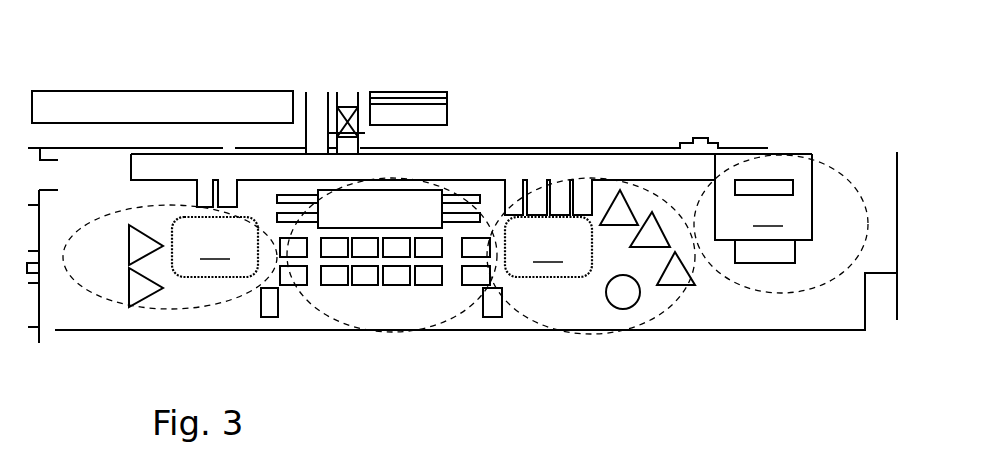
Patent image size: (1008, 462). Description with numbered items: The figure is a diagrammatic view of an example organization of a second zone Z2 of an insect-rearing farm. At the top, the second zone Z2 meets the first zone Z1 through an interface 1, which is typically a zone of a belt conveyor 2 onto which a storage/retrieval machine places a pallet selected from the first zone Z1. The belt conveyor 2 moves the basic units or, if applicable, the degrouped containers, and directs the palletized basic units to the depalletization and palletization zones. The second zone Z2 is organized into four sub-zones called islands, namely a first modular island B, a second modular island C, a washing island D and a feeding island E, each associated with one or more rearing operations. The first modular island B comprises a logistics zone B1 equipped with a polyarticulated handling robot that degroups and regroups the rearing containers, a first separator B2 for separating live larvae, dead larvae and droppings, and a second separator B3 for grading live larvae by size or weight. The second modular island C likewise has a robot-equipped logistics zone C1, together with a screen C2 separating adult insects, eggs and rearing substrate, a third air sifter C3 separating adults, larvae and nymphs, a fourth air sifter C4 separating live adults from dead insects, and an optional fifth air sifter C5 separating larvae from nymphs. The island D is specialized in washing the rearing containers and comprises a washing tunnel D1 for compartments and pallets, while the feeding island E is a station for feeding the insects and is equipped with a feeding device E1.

The interface 1 is at (315, 105).
The belt conveyor 2 is at (168, 168).
The first zone Z1 is at (496, 90).
The second zone Z2 is at (745, 345).
The first modular island B is at (218, 312).
The logistics zone B1 is at (215, 247).
The first separator B2 is at (131, 305).
The second separator B3 is at (127, 240).
The second modular island C is at (527, 318).
The logistics zone C1 is at (548, 247).
The screen C2 is at (620, 300).
The third air sifter C3 is at (668, 290).
The fourth air sifter C4 is at (665, 215).
The fifth air sifter C5 is at (625, 196).
The island D is at (398, 336).
The washing tunnel D1 is at (367, 212).
The feeding island E is at (827, 165).
The feeding device E1 is at (763, 208).